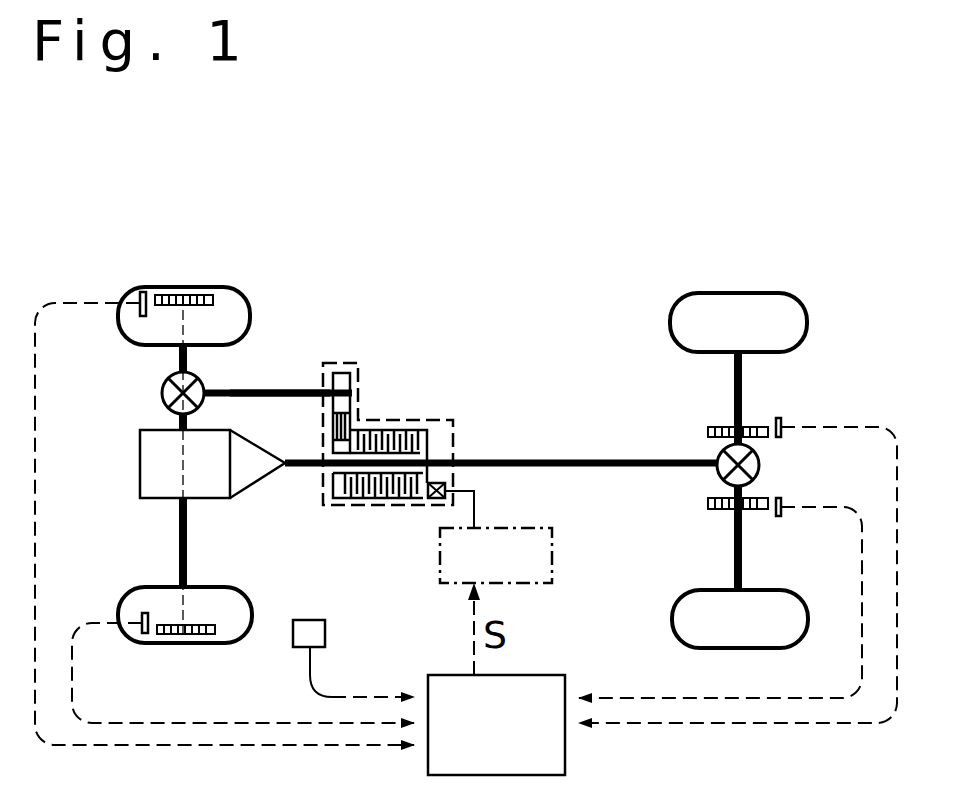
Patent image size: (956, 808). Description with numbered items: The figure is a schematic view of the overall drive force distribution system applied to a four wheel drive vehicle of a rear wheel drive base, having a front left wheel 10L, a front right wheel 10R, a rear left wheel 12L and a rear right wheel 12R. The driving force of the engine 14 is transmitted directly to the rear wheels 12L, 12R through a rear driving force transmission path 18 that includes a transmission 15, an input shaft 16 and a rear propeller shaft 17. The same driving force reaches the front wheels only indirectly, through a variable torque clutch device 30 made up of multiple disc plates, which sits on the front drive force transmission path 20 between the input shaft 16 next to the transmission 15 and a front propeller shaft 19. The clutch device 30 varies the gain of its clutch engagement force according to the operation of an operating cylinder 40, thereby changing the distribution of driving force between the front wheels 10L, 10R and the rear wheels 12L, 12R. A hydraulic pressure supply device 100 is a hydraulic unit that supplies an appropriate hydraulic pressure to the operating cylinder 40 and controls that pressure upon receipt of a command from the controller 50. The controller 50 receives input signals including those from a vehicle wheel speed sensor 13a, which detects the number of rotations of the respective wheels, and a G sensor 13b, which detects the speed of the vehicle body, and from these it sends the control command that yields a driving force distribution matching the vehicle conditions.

The front right wheel 10R is at (220, 287).
The front left wheel 10L is at (218, 643).
The rear right wheel 12R is at (740, 293).
The rear left wheel 12L is at (730, 648).
The vehicle wheel speed sensor 13a is at (143, 291).
The G sensor 13b is at (326, 632).
The engine 14 is at (150, 498).
The transmission 15 is at (258, 490).
The input shaft 16 is at (305, 467).
The rear propeller shaft 17 is at (532, 460).
The rear driving force transmission path 18 is at (598, 458).
The front propeller shaft 19 is at (250, 397).
The front drive force transmission path 20 is at (290, 385).
The variable torque clutch device 30 is at (387, 430).
The operating cylinder 40 is at (432, 499).
The controller 50 is at (511, 743).
The hydraulic pressure supply device 100 is at (553, 556).